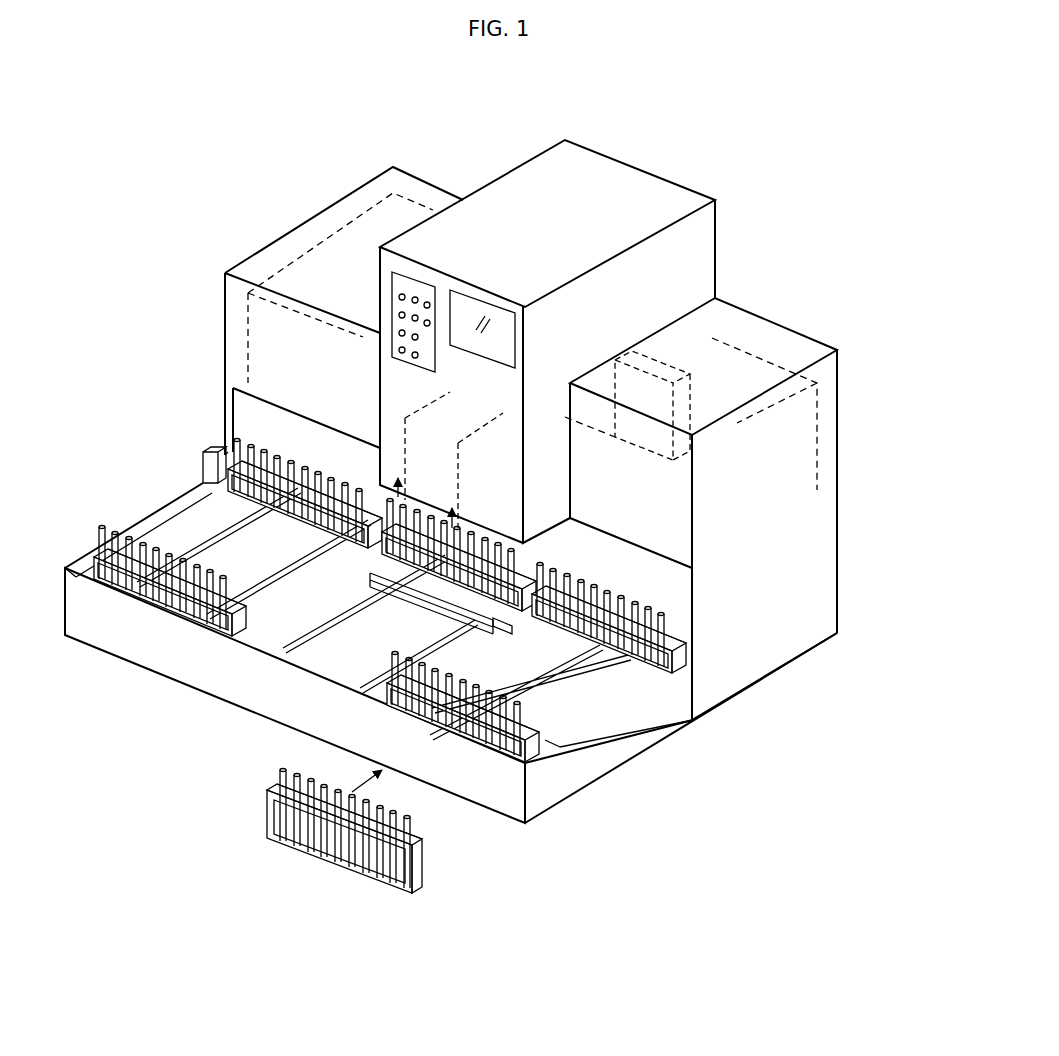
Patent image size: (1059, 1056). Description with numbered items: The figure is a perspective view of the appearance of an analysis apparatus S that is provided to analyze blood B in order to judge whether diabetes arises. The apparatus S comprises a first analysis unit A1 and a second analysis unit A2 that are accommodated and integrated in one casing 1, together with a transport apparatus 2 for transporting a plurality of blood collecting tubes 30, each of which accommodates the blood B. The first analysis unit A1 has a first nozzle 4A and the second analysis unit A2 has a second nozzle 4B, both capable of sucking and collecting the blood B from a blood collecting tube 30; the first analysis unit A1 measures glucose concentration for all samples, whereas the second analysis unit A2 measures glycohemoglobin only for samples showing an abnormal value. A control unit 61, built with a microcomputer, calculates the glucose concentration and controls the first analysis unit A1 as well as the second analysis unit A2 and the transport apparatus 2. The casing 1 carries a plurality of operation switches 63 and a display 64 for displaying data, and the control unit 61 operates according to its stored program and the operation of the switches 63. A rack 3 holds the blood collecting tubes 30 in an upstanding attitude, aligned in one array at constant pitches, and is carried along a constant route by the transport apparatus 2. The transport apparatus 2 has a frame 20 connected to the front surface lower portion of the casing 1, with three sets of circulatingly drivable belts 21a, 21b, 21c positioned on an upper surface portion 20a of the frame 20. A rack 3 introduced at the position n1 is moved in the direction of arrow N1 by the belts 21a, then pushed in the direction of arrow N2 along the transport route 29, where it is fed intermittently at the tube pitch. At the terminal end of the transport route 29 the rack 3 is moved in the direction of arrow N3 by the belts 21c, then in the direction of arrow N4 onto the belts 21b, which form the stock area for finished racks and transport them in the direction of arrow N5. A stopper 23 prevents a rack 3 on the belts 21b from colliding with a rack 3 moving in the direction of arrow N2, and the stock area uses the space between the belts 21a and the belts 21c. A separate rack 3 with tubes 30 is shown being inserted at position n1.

The casing 1 is at (232, 343).
The transport apparatus 2 is at (163, 684).
The rack 3 is at (680, 606).
The frame 20 is at (205, 672).
The upper surface portion 20a is at (600, 718).
The belts 21a is at (630, 715).
The belts 21b is at (440, 625).
The belts 21c is at (282, 550).
The stopper 23 is at (425, 603).
The transport route 29 is at (506, 626).
The blood collecting tube 30 is at (268, 456).
The first nozzle 4A is at (462, 528).
The second nozzle 4B is at (404, 500).
The control unit 61 is at (633, 362).
The operation switches 63 is at (416, 297).
The display 64 is at (500, 322).
The first analysis unit A1 is at (756, 346).
The second analysis unit A2 is at (415, 192).
The blood B is at (378, 885).
The analysis apparatus S is at (316, 138).
The arrow N1 is at (559, 669).
The arrow N2 is at (522, 548).
The arrow N3 is at (272, 530).
The arrow N4 is at (312, 651).
The arrow N5 is at (387, 629).
The position n1 is at (560, 745).